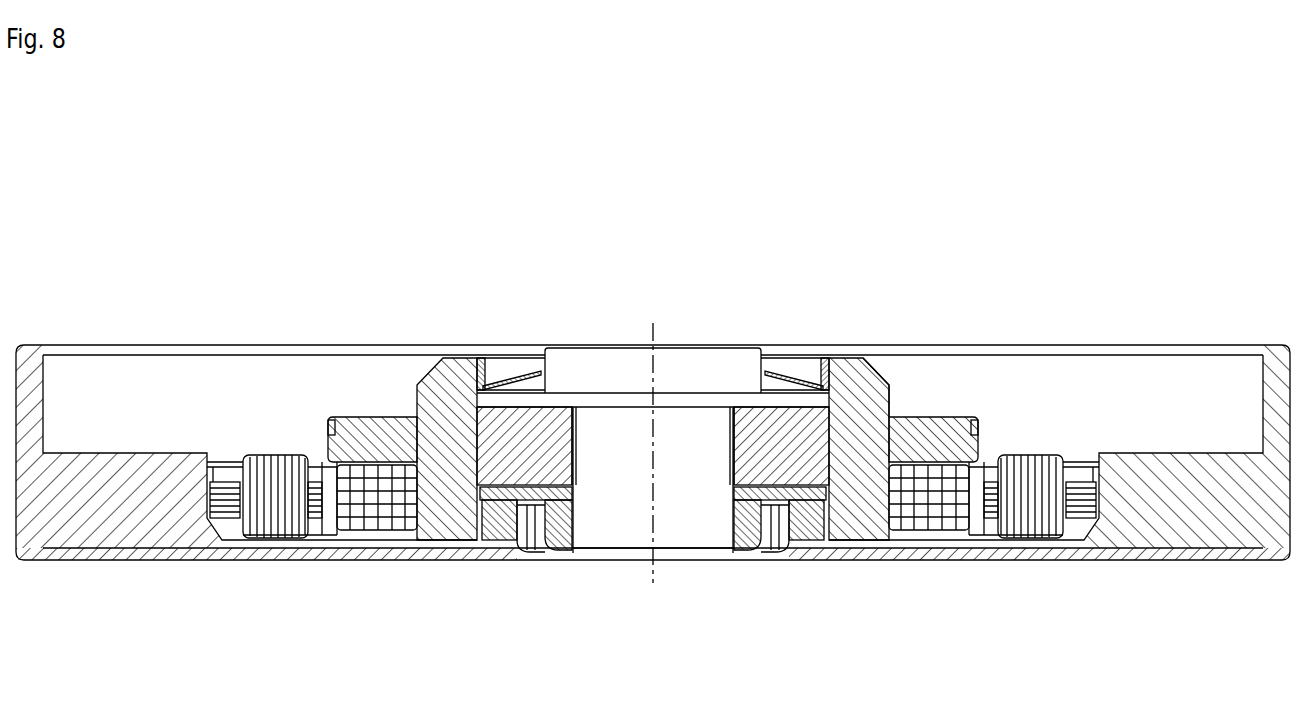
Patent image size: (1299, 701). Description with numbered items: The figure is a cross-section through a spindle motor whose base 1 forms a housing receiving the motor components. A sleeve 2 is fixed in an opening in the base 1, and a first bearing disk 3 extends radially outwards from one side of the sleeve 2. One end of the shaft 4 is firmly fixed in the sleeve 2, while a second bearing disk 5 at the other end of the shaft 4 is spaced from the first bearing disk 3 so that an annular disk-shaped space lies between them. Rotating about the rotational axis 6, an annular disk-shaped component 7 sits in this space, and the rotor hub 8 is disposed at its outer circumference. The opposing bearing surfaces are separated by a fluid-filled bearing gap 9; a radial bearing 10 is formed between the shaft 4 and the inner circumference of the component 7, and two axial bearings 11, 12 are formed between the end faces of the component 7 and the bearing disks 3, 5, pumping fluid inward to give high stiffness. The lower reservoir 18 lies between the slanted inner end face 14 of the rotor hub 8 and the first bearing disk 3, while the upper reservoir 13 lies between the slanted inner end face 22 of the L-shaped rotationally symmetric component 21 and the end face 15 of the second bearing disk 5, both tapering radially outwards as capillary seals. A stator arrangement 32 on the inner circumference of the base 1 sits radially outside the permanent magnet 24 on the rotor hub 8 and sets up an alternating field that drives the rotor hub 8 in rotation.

The base 1 is at (367, 560).
The sleeve 2 is at (563, 502).
The first bearing disk 3 is at (485, 500).
The shaft 4 is at (695, 530).
The second bearing disk 5 is at (540, 400).
The rotational axis 6 is at (656, 322).
The annular disk-shaped component 7 is at (493, 437).
The rotor hub 8 is at (360, 430).
The bearing gap 9 is at (575, 468).
The radial bearing 10 is at (576, 440).
The axial bearing 11 is at (520, 540).
The axial bearing 12 is at (520, 410).
The annular reservoir 13 is at (766, 386).
The slanted inner end face of the rotor hub 14 is at (908, 413).
The end face of the second bearing disk 15 is at (836, 372).
The lower reservoir 18 is at (784, 545).
The rotationally symmetric component 21 is at (888, 385).
The slanted inner end face 22 is at (797, 382).
The permanent magnet 24 is at (970, 422).
The stator arrangement 32 is at (267, 487).